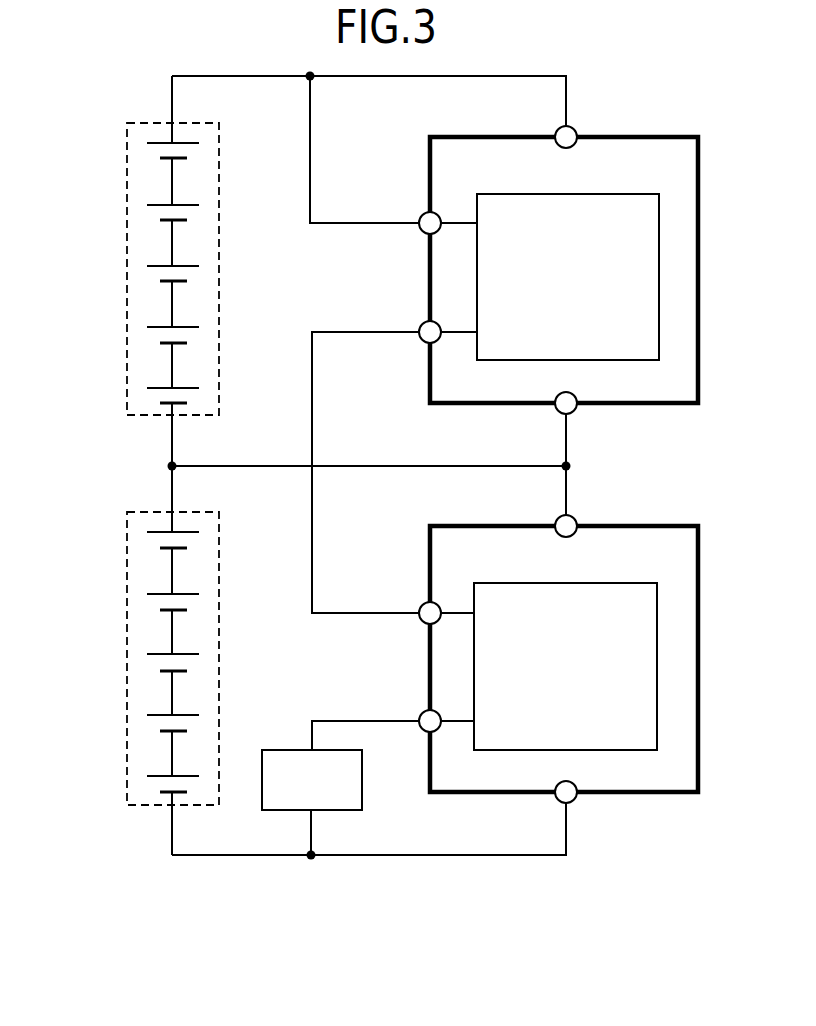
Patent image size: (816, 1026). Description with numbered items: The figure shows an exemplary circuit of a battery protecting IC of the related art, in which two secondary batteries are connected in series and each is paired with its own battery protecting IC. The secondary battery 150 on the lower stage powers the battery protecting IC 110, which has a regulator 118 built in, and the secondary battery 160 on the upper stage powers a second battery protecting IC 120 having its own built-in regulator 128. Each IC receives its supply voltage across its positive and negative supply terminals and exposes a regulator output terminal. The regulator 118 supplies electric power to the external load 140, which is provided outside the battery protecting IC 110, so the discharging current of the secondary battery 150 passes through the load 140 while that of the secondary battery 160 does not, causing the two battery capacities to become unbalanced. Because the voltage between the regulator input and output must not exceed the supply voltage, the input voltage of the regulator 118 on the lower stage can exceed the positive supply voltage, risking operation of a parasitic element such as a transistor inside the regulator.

The battery protecting IC 110 is at (541, 659).
The regulator 118 is at (513, 583).
The second integrated circuit device 120 is at (541, 271).
The regulator of second integrated circuit device 128 is at (513, 194).
The load 140 is at (323, 810).
The secondary battery 150 is at (127, 602).
The secondary battery 160 is at (127, 212).